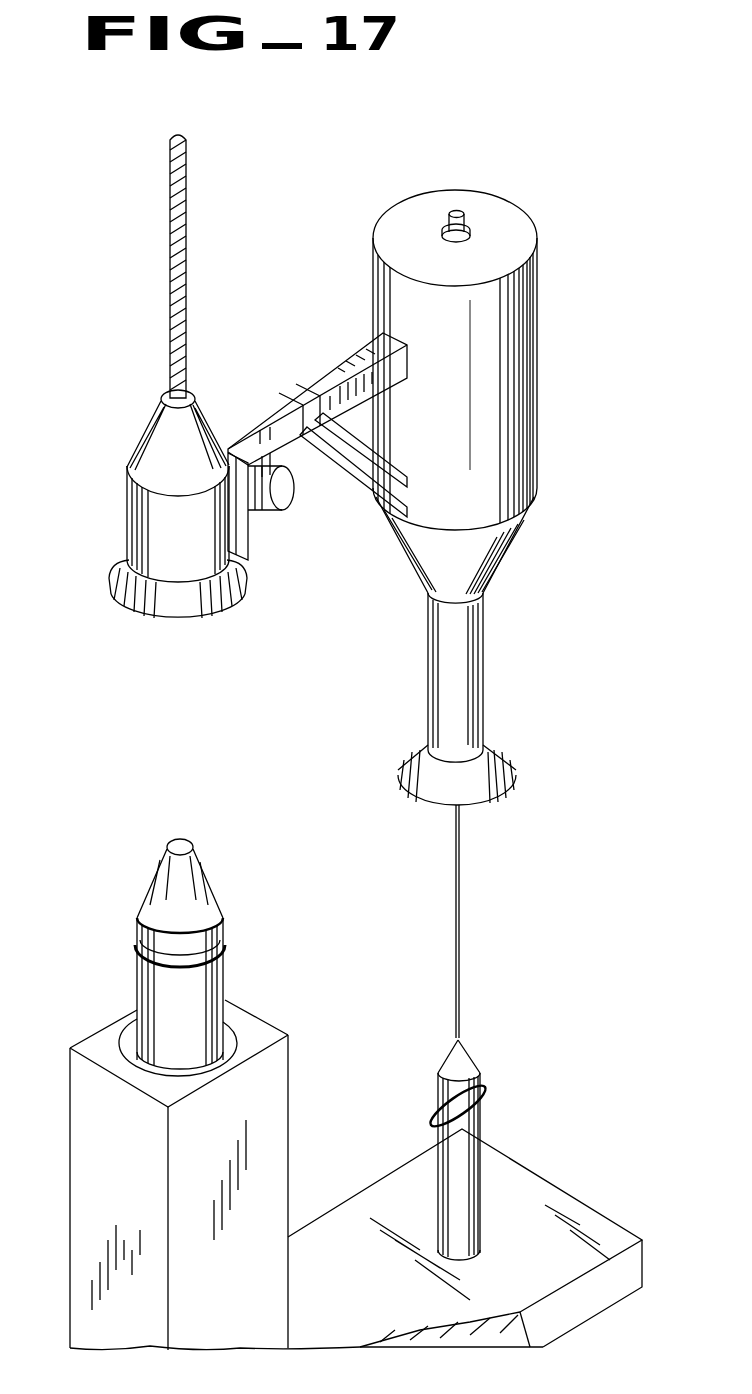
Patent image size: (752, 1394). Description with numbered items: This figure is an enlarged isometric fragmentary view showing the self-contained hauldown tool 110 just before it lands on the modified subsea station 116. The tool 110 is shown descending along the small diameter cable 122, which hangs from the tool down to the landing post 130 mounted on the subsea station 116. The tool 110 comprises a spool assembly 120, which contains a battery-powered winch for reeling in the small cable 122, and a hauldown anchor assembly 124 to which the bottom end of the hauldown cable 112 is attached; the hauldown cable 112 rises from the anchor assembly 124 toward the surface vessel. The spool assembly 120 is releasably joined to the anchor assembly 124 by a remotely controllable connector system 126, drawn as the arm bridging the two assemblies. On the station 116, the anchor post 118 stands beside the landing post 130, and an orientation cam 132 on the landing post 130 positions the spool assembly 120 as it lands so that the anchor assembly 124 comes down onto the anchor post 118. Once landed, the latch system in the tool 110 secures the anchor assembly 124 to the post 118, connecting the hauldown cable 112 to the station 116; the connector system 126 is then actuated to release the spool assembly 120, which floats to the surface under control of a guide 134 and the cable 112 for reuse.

The self-contained hauldown tool 110 is at (552, 337).
The hauldown cable 112 is at (170, 233).
The subsea station 116 is at (572, 1188).
The anchor post 118 is at (143, 983).
The spool assembly 120 is at (517, 385).
The small diameter cable 122 is at (461, 884).
The hauldown anchor assembly 124 is at (135, 503).
The remotely controllable connector system 126 is at (296, 387).
The landing post 130 is at (476, 1138).
The orientation cam 132 is at (483, 1098).
The guide 134 is at (459, 211).